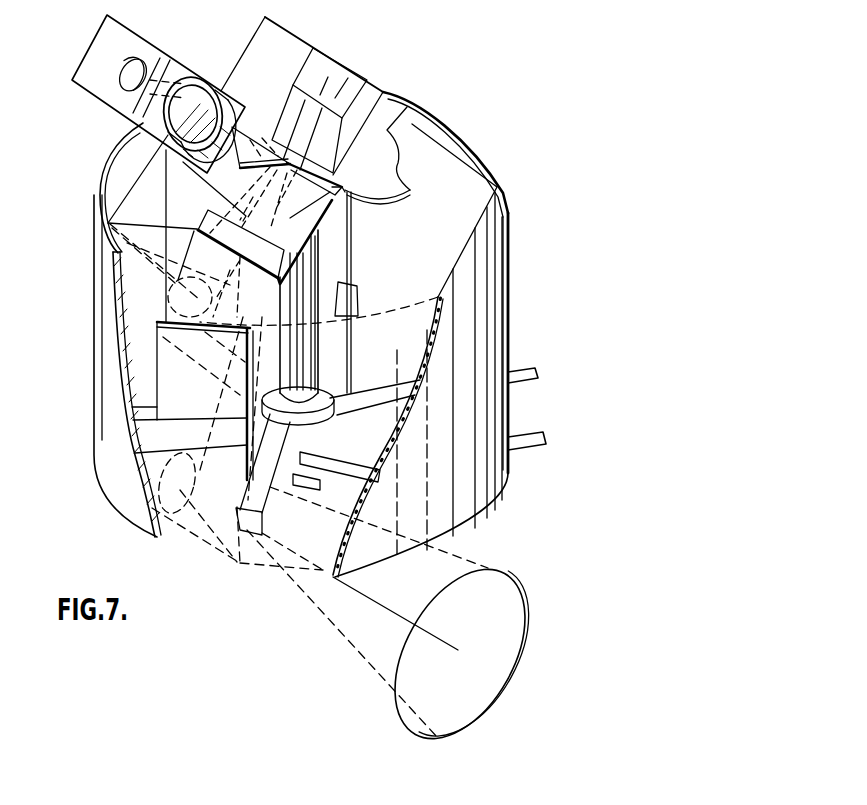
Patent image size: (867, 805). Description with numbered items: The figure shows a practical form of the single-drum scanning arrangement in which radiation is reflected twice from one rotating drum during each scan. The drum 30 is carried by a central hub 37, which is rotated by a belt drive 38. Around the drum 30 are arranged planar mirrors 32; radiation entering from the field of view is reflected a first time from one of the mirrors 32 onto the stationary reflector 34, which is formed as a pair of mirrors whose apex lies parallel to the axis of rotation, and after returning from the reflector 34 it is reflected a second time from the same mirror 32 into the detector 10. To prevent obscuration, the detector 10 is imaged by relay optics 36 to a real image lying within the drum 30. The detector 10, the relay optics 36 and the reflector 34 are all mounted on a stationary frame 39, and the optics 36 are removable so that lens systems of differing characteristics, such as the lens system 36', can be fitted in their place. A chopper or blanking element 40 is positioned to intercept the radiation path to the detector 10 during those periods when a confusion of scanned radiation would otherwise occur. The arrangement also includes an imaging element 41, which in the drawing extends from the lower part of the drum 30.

The detector 10 is at (318, 67).
The drum 30 is at (508, 203).
The planar mirrors 32 is at (448, 177).
The stationary reflector 34 is at (183, 378).
The relay optics 36 is at (196, 222).
The lens system of differing characteristics 36' is at (158, 94).
The central hub 37 is at (333, 385).
The belt drive 38 is at (533, 447).
The stationary frame 39 is at (273, 37).
The chopper or blanking element 40 is at (392, 130).
The imaging element 41 is at (502, 614).